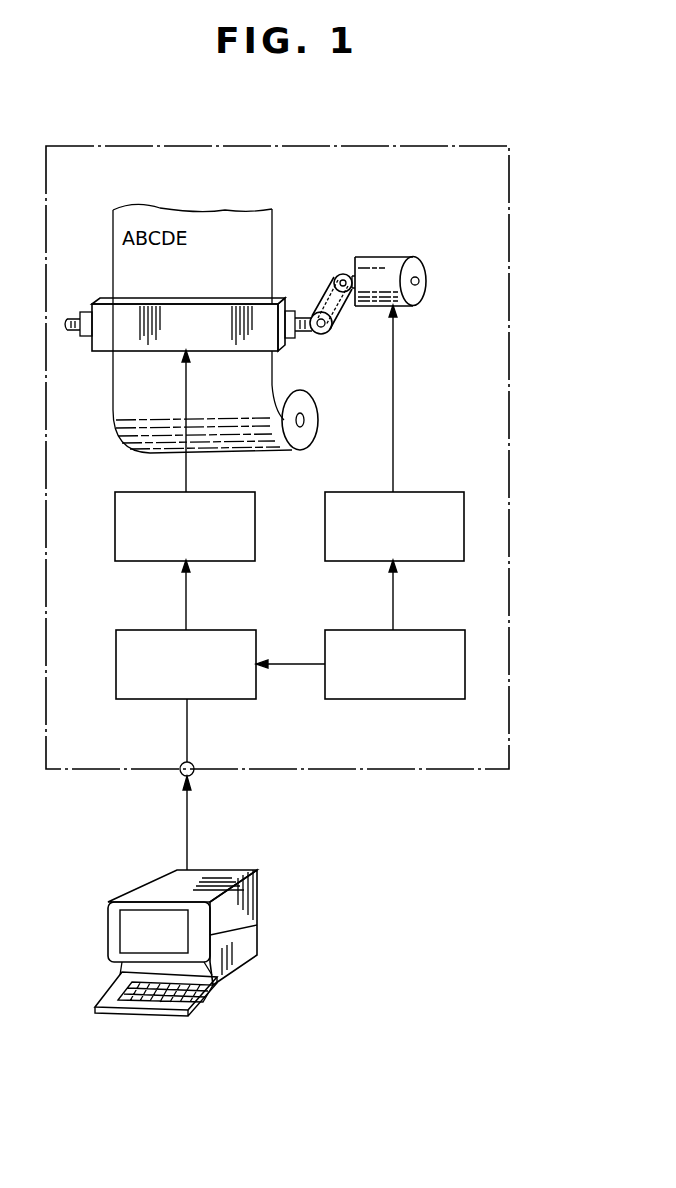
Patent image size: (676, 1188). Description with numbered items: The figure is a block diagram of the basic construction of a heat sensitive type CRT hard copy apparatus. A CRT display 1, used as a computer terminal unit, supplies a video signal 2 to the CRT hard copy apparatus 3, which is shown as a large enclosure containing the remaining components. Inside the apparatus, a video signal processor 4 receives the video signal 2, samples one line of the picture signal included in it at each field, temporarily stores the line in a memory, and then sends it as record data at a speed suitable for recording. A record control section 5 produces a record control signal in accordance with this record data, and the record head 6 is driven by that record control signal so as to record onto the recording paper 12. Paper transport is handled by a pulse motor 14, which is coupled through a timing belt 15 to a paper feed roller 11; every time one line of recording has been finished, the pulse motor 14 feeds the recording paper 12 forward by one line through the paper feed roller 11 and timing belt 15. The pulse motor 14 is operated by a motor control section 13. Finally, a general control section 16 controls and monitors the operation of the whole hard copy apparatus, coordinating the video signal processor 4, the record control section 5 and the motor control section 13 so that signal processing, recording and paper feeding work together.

The CRT display 1 is at (232, 877).
The video signal 2 is at (187, 828).
The CRT hard copy apparatus 3 is at (394, 772).
The video signal processor 4 is at (252, 644).
The record control section 5 is at (250, 508).
The record head 6 is at (101, 345).
The paper feed roller 11 is at (294, 312).
The recording paper 12 is at (317, 405).
The motor control section 13 is at (450, 496).
The pulse motor 14 is at (389, 265).
The timing belt 15 is at (338, 318).
The general control section 16 is at (462, 645).